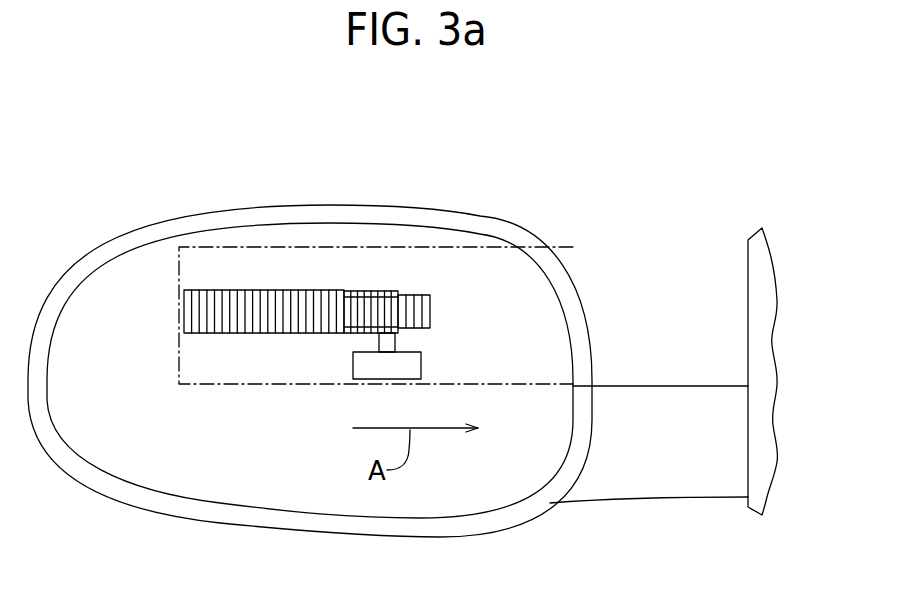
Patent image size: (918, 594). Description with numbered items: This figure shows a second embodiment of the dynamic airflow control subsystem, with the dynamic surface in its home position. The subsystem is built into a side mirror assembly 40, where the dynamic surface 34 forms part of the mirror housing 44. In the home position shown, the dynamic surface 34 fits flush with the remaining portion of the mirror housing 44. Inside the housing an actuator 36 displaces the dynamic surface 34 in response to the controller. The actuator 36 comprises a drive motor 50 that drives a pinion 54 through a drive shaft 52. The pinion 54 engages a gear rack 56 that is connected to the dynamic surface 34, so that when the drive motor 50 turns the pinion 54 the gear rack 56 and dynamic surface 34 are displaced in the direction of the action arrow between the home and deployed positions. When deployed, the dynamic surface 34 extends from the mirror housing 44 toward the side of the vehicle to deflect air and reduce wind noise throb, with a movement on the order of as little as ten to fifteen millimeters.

The side mirror assembly 40 is at (549, 149).
The mirror housing 44 is at (402, 208).
The dynamic surface 34 is at (463, 248).
The actuator 36 is at (181, 433).
The gear rack 56 is at (212, 300).
The pinion 54 is at (370, 300).
The drive shaft 52 is at (388, 341).
The drive motor 50 is at (381, 370).